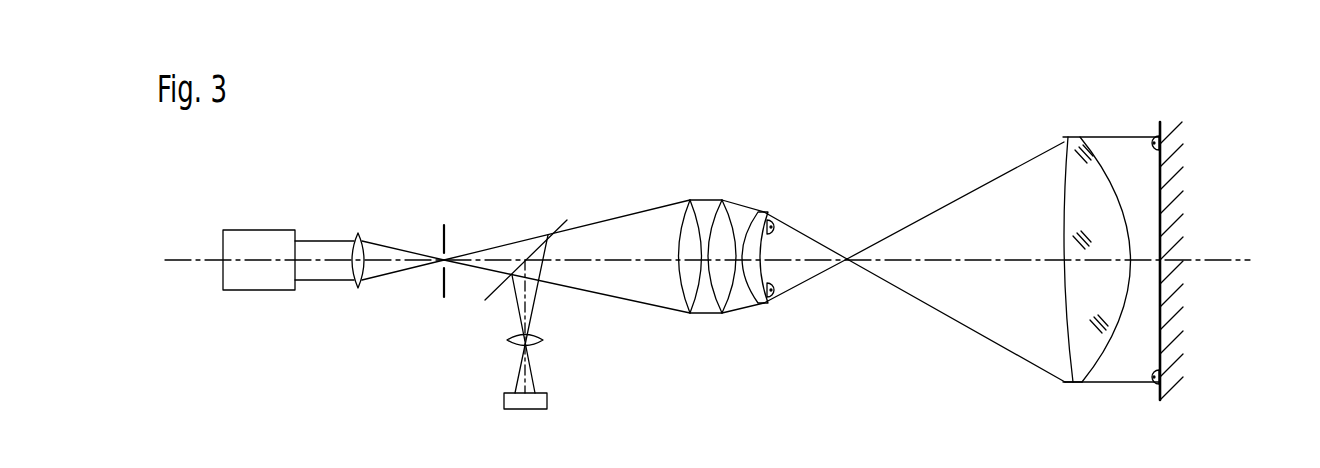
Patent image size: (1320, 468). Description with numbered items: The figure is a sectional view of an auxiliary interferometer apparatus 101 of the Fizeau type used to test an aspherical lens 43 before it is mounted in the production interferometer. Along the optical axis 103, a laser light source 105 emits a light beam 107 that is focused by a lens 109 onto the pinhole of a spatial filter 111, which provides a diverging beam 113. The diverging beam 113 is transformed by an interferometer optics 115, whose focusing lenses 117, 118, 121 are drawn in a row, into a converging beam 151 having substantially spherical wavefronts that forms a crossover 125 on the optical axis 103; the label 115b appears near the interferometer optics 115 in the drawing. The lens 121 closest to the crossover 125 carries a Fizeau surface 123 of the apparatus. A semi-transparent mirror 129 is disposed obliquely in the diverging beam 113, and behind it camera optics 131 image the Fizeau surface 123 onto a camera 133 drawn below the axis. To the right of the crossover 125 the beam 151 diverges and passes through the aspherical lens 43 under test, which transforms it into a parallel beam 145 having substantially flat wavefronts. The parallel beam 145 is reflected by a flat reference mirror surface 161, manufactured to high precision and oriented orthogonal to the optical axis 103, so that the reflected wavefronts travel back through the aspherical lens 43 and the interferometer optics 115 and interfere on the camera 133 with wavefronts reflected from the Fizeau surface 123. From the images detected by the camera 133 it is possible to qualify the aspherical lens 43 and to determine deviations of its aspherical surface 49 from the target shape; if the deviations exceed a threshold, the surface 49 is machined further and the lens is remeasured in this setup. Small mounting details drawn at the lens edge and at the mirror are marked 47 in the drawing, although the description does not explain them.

The auxiliary interferometer apparatus 101 is at (678, 119).
The optical axis 103 is at (190, 262).
The laser light source 105 is at (258, 230).
The light beam 107 is at (330, 280).
The lens 109 is at (358, 233).
The spatial filter 111 is at (447, 232).
The diverging beam 113 is at (632, 213).
The interferometer optics 115 is at (771, 171).
The lens group portion 115b is at (833, 452).
The focusing lens 117 is at (690, 314).
The focusing lens 118 is at (722, 314).
The focusing lens 121 is at (765, 305).
The Fizeau surface 123 is at (775, 294).
The crossover 125 is at (848, 264).
The semi-transparent mirror 129 is at (553, 219).
The camera optics 131 is at (545, 340).
The camera 133 is at (547, 400).
The parallel beam 145 is at (1115, 136).
The converging beam 151 is at (805, 235).
The flat reference mirror surface 161 is at (1159, 120).
The aspherical surface 49 is at (1066, 172).
The aspherical lens 43 is at (1068, 384).
The mount element 47 is at (1097, 370).